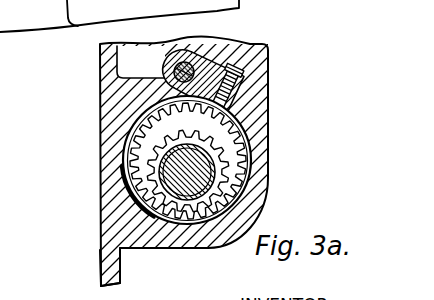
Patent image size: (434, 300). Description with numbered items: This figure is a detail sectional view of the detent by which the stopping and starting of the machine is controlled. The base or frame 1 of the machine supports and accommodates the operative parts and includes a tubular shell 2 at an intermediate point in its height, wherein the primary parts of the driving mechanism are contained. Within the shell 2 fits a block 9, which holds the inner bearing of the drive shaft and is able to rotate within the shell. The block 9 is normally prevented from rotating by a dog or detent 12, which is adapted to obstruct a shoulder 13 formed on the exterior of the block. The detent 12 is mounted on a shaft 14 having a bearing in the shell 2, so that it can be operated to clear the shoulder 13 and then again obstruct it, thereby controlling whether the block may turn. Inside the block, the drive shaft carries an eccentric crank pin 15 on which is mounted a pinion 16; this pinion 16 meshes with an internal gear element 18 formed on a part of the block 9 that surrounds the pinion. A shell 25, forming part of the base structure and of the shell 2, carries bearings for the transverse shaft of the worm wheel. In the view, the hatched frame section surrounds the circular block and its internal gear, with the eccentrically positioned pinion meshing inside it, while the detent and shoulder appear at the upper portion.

The base or frame 1 is at (107, 281).
The tubular shell 2 is at (251, 166).
The block 9 is at (267, 135).
The dog or detent 12 is at (258, 113).
The shoulder 13 is at (222, 104).
The shaft 14 is at (200, 58).
The eccentric crank pin 15 is at (157, 185).
The pinion 16 is at (150, 158).
The internal gear element 18 is at (238, 195).
The shell 25 is at (264, 62).